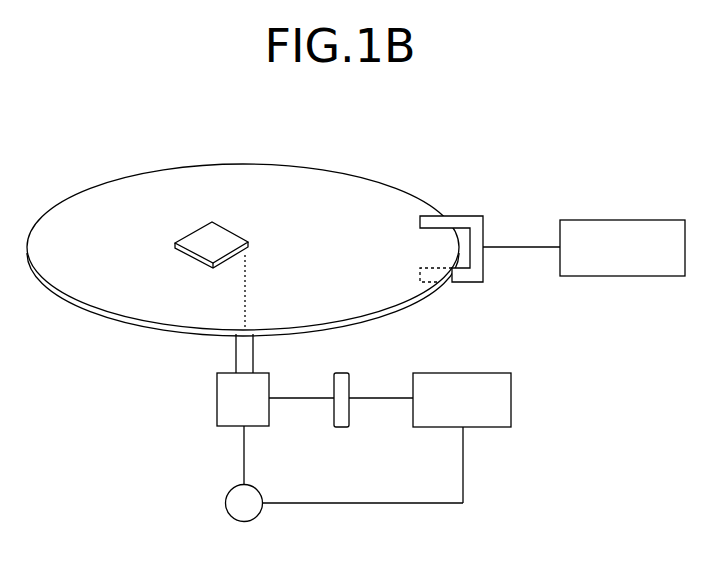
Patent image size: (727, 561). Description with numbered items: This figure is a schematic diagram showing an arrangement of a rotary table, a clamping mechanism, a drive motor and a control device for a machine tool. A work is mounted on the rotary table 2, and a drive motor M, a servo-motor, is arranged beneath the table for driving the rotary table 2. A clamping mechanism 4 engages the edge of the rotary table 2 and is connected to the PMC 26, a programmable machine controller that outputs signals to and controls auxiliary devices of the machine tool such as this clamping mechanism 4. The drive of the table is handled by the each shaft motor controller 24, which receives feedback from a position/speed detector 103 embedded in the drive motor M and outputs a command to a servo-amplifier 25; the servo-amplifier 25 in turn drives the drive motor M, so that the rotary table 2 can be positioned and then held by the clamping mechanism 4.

The rotary table 2 is at (243, 268).
The clamping mechanism 4 is at (466, 216).
The each shaft motor controller 24 is at (488, 372).
The servo-amplifier 25 is at (341, 372).
The PMC (programmable machine controller) 26 is at (620, 220).
The position/speed detector 103 is at (225, 503).